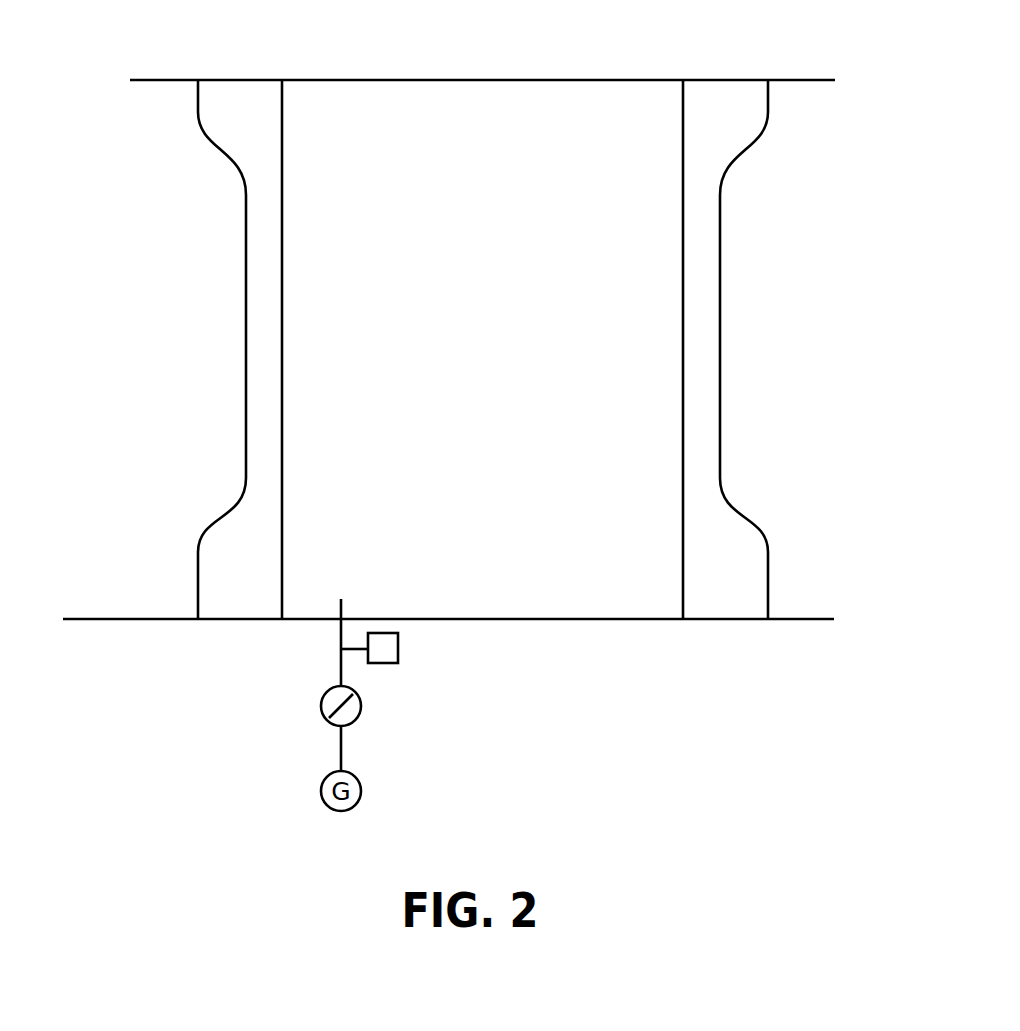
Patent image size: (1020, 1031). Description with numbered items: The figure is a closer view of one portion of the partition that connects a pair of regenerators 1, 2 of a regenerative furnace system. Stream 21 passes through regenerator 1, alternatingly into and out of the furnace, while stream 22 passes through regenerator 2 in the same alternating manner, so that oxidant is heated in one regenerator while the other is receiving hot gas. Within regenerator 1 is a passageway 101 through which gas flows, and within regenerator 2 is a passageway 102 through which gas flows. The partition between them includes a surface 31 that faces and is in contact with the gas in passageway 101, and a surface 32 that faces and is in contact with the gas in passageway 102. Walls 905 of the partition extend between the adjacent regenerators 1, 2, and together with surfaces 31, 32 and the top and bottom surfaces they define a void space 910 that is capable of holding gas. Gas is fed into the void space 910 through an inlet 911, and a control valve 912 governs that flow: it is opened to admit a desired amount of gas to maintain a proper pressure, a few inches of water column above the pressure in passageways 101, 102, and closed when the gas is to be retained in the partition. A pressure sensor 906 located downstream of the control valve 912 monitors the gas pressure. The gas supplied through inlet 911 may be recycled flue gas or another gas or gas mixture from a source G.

The regenerator 1 is at (135, 339).
The regenerator 2 is at (800, 339).
The stream 21 is at (198, 80).
The stream 22 is at (768, 80).
The surface 31 is at (282, 322).
The surface 32 is at (684, 306).
The passageway 101 is at (246, 252).
The passageway 102 is at (721, 215).
The walls 905 is at (384, 80).
The pressure sensor 906 is at (390, 648).
The void space 910 is at (498, 339).
The inlet 911 is at (333, 632).
The valve 912 is at (322, 706).